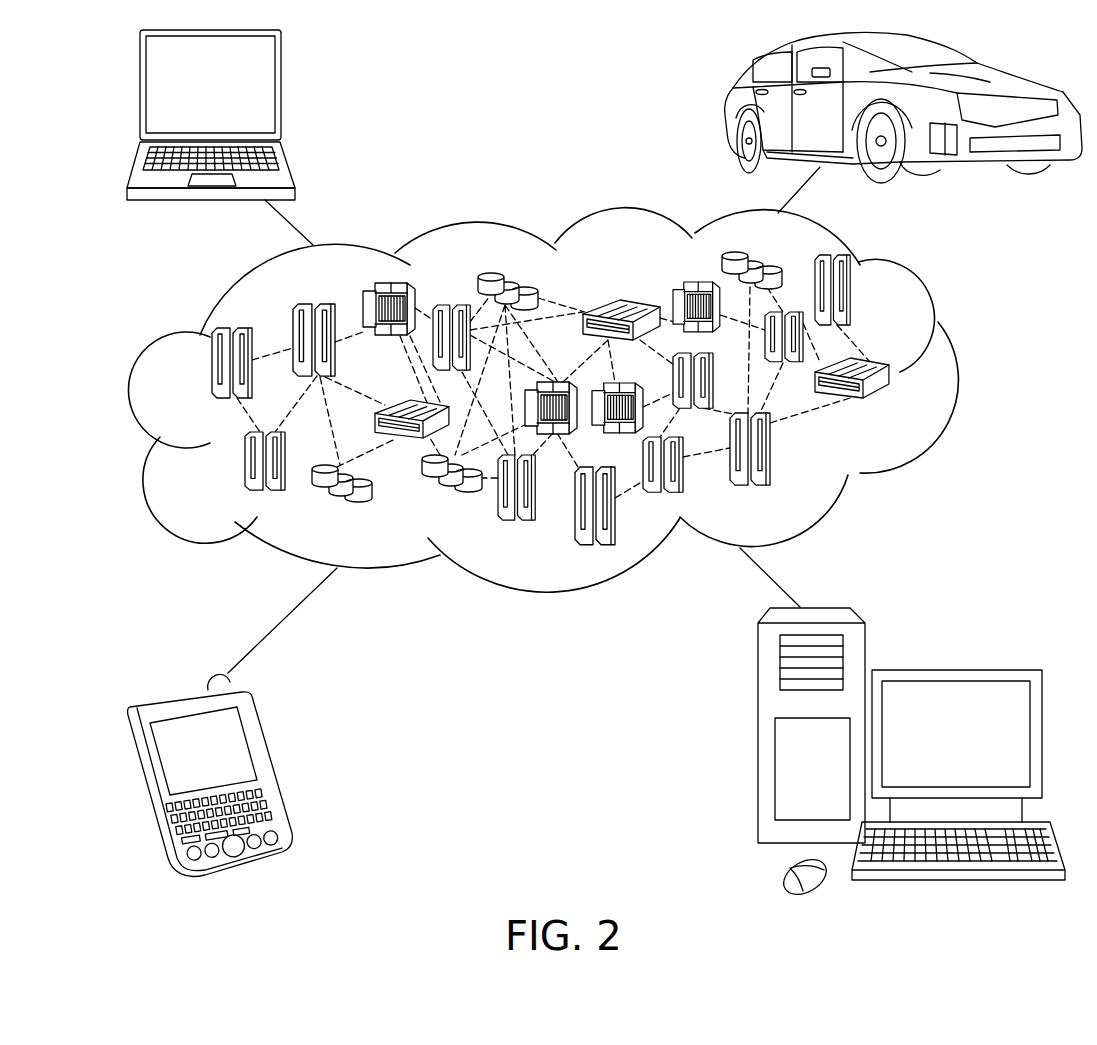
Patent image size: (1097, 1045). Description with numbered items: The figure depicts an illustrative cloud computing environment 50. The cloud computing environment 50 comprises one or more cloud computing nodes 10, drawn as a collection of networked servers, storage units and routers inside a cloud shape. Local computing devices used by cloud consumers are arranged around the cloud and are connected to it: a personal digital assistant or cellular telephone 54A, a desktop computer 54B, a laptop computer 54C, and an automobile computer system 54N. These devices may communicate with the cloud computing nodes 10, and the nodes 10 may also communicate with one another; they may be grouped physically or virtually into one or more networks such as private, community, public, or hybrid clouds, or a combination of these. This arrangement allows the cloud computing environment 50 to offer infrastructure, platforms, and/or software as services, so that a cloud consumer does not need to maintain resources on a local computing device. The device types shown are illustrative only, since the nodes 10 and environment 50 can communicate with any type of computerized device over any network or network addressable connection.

The cloud computing node 10 is at (895, 403).
The cloud computing environment 50 is at (954, 373).
The personal digital assistant (PDA) or cellular telephone 54A is at (272, 761).
The desktop computer 54B is at (953, 668).
The laptop computer 54C is at (281, 93).
The automobile computer system 54N is at (730, 112).